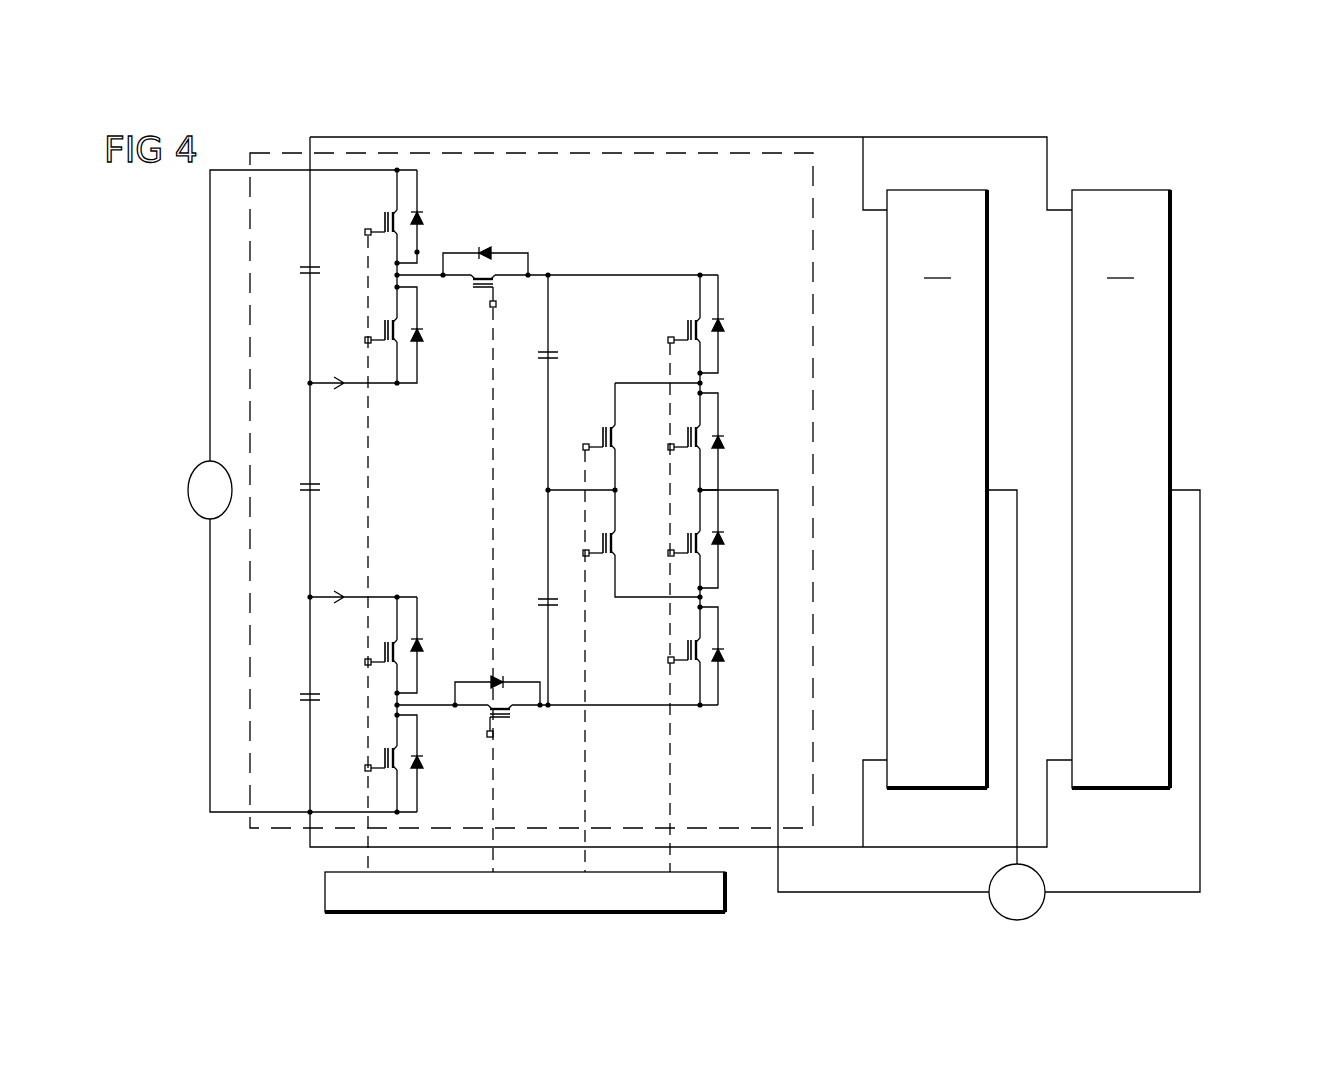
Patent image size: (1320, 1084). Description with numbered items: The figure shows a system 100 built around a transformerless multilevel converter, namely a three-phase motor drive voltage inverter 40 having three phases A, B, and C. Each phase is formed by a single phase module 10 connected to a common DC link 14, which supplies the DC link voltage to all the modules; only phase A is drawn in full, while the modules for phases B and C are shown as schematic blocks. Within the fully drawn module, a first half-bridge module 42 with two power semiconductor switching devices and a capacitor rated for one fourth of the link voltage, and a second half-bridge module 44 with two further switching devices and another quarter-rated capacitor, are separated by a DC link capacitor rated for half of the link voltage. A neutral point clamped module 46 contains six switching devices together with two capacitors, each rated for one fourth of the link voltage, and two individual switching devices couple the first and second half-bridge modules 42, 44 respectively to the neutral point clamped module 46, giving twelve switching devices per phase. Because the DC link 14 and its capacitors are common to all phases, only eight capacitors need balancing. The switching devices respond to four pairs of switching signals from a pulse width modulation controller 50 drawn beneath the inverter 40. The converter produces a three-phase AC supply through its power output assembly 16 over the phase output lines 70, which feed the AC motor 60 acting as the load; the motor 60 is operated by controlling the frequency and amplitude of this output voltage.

The system 100 is at (1214, 150).
The three-phase motor drive voltage inverter 40 is at (310, 137).
The single phase module 10 is at (265, 832).
The DC link 14 is at (210, 648).
The first half-bridge module 42 is at (411, 409).
The second half-bridge module 44 is at (412, 572).
The neutral point clamped module 46 is at (637, 262).
The controller 50 is at (325, 890).
The motor 60 is at (1040, 875).
The phase output lines 70 is at (1017, 528).
The power output assembly 16 is at (1233, 876).